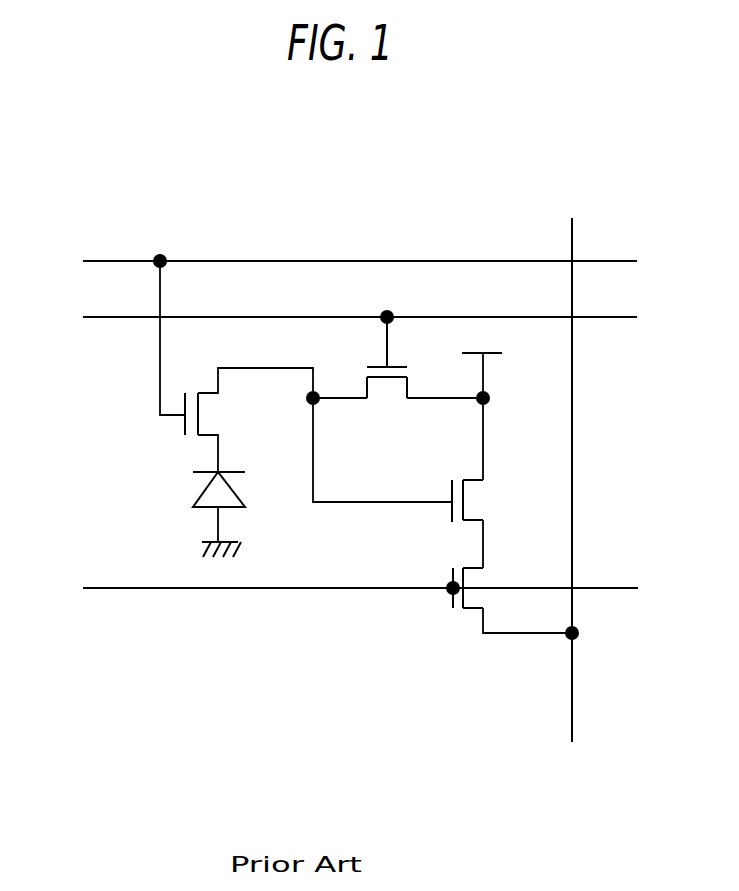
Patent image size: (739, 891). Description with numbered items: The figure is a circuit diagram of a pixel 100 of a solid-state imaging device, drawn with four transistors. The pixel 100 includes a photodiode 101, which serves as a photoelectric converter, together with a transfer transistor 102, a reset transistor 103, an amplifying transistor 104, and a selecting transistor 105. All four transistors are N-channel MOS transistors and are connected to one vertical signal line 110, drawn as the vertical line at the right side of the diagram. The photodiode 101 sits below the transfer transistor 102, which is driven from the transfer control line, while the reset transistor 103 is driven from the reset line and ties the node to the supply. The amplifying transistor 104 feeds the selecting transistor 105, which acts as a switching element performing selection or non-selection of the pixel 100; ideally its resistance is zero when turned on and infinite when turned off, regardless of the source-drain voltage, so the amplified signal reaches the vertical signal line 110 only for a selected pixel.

The pixel 100 is at (480, 205).
The photodiode 101 is at (210, 495).
The transfer transistor 102 is at (210, 414).
The reset transistor 103 is at (385, 383).
The amplifying transistor 104 is at (473, 500).
The selecting transistor 105 is at (478, 581).
The vertical signal line 110 is at (575, 672).